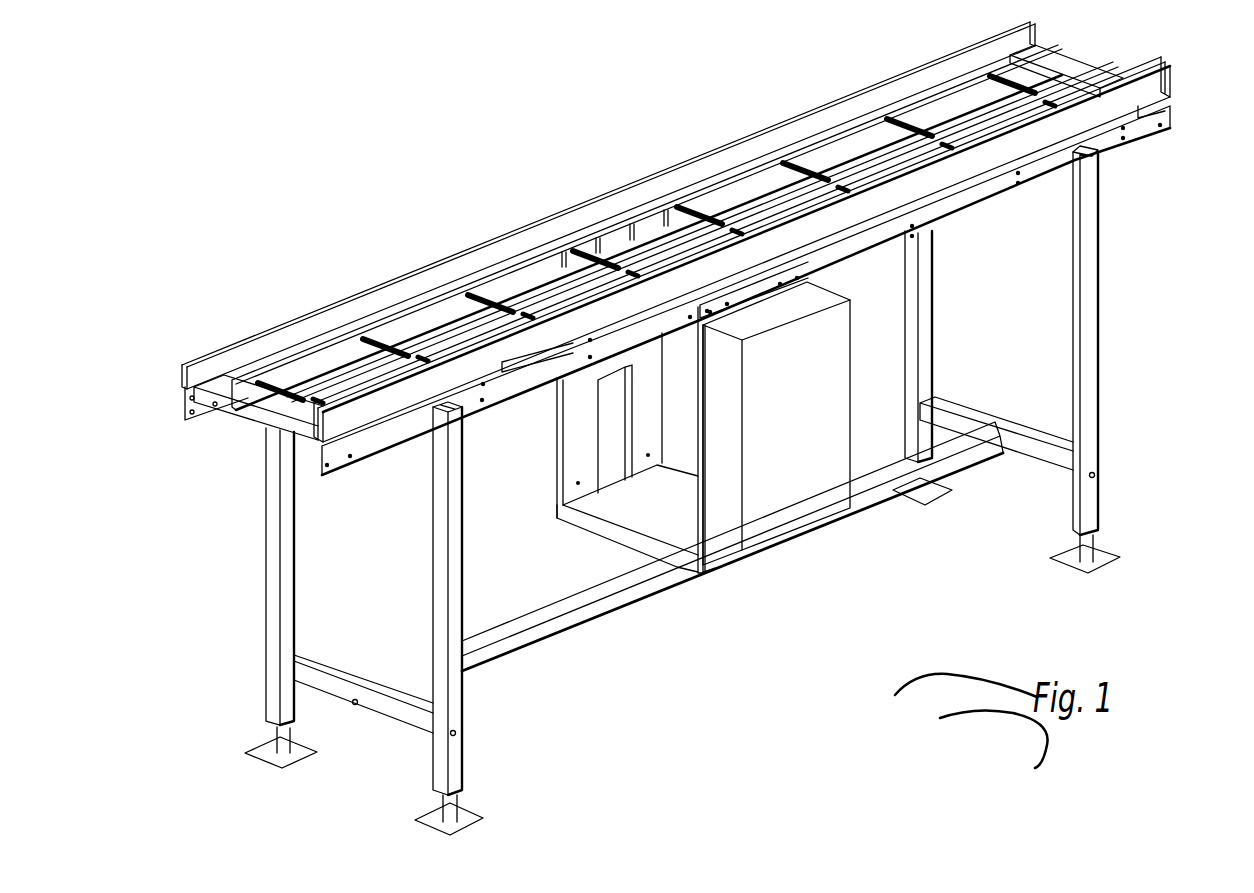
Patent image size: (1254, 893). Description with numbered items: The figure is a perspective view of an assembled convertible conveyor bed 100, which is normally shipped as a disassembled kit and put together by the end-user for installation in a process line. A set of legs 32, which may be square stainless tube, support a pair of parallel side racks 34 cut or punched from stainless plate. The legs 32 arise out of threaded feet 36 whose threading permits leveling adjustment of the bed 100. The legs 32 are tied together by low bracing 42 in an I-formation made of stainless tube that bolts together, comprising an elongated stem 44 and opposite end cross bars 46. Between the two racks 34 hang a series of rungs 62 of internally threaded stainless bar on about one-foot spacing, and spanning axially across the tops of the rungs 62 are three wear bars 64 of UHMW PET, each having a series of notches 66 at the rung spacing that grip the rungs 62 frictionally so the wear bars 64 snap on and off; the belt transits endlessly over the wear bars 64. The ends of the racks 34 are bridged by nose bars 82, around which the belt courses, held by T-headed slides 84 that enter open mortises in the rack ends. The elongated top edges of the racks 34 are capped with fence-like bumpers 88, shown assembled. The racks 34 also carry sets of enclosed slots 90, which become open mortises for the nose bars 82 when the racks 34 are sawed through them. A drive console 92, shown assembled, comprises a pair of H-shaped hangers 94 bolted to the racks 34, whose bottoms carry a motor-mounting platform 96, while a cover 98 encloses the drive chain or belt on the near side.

The convertible conveyor bed 100 is at (417, 152).
The legs 32 is at (1089, 323).
The side racks 34 is at (981, 195).
The threaded feet 36 is at (1098, 556).
The low bracing 42 is at (985, 468).
The elongated stem 44 is at (880, 502).
The end cross bars 46 is at (980, 423).
The rungs 62 is at (762, 215).
The wear bars 64 is at (893, 163).
The notches 66 is at (748, 225).
The nose bars 82 is at (1070, 67).
The T-headed slides 84 is at (1175, 110).
The bumpers 88 is at (421, 282).
The enclosed slots 90 is at (535, 362).
The drive console 92 is at (705, 578).
The H-shaped hangers 94 is at (572, 467).
The motor-mounting platform 96 is at (671, 525).
The cover 98 is at (817, 437).